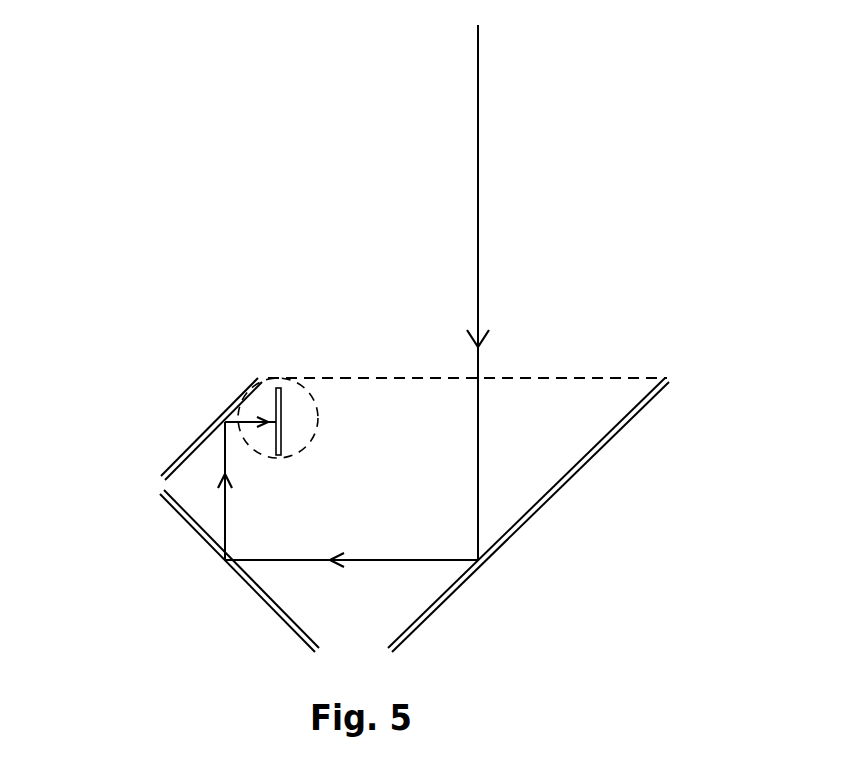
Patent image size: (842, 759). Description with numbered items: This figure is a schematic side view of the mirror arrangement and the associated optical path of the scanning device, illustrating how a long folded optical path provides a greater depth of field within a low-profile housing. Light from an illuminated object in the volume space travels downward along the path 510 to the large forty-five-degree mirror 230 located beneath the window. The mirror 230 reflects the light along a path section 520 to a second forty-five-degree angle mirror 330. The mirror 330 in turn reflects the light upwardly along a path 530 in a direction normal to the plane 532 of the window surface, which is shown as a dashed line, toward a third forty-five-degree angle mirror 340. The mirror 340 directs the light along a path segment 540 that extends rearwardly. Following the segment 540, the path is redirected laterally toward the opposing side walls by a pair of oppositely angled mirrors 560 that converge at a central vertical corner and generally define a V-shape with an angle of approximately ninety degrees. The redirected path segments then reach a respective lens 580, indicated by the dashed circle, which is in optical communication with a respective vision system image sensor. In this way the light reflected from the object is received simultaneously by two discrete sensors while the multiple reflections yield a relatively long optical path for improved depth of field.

The large 45-degree mirror 230 is at (513, 530).
The second 45-degree angle mirror 330 is at (263, 600).
The third 45-degree angle mirror 340 is at (195, 438).
The path 510 is at (480, 183).
The path section 520 is at (413, 567).
The reflected beam 530 is at (222, 503).
The path segment 540 is at (245, 403).
The oppositely angled mirrors 560 is at (282, 433).
The lens 580 is at (318, 380).
The plane of the window surface 532 is at (552, 378).